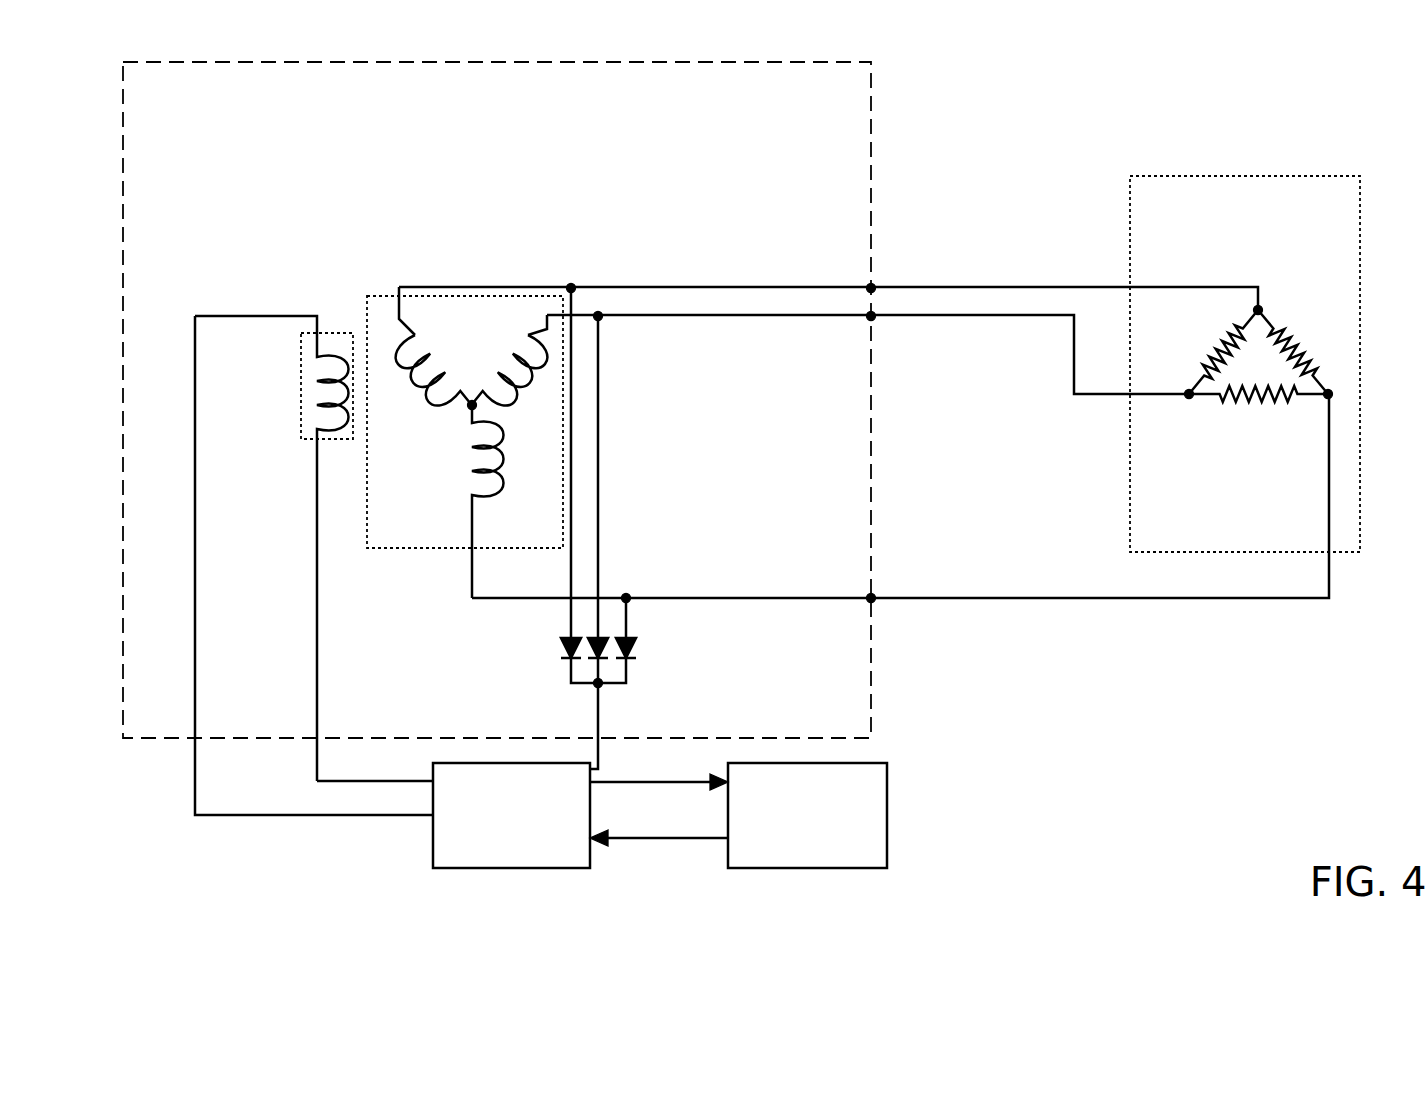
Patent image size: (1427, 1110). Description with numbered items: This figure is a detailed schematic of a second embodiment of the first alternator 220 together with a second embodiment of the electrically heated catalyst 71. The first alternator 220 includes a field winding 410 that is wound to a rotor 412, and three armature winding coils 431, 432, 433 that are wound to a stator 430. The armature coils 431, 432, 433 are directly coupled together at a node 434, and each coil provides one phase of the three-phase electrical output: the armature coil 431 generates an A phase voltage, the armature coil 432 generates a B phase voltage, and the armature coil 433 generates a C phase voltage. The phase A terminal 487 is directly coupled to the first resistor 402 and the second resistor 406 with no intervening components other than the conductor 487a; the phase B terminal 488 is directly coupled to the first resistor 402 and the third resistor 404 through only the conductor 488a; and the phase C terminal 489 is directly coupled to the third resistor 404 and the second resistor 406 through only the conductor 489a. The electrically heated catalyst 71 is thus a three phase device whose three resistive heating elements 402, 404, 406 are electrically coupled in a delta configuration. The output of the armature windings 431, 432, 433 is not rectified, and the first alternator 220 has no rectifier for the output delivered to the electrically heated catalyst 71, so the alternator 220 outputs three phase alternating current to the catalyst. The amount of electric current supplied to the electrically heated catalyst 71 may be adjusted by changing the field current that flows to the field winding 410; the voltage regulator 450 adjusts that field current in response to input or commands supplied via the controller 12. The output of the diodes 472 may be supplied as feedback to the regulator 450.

The first alternator 220 is at (137, 62).
The field winding 410 is at (311, 400).
The rotor 412 is at (347, 440).
The stator 430 is at (403, 548).
The armature coil 431 is at (436, 399).
The armature coil 432 is at (512, 351).
The armature coil 433 is at (467, 476).
The node 434 is at (470, 409).
The phase A terminal 487 is at (866, 284).
The conductor 487a is at (1015, 286).
The phase B terminal 488 is at (876, 319).
The conductor 488a is at (975, 318).
The phase C terminal 489 is at (875, 601).
The conductor 489a is at (1057, 601).
The diodes 472 is at (566, 659).
The voltage regulator 450 is at (511, 815).
The controller 12 is at (807, 815).
The electrically heated catalyst 71 is at (1360, 552).
The first resistor 402 is at (1208, 353).
The third resistor 404 is at (1264, 402).
The second resistor 406 is at (1295, 340).